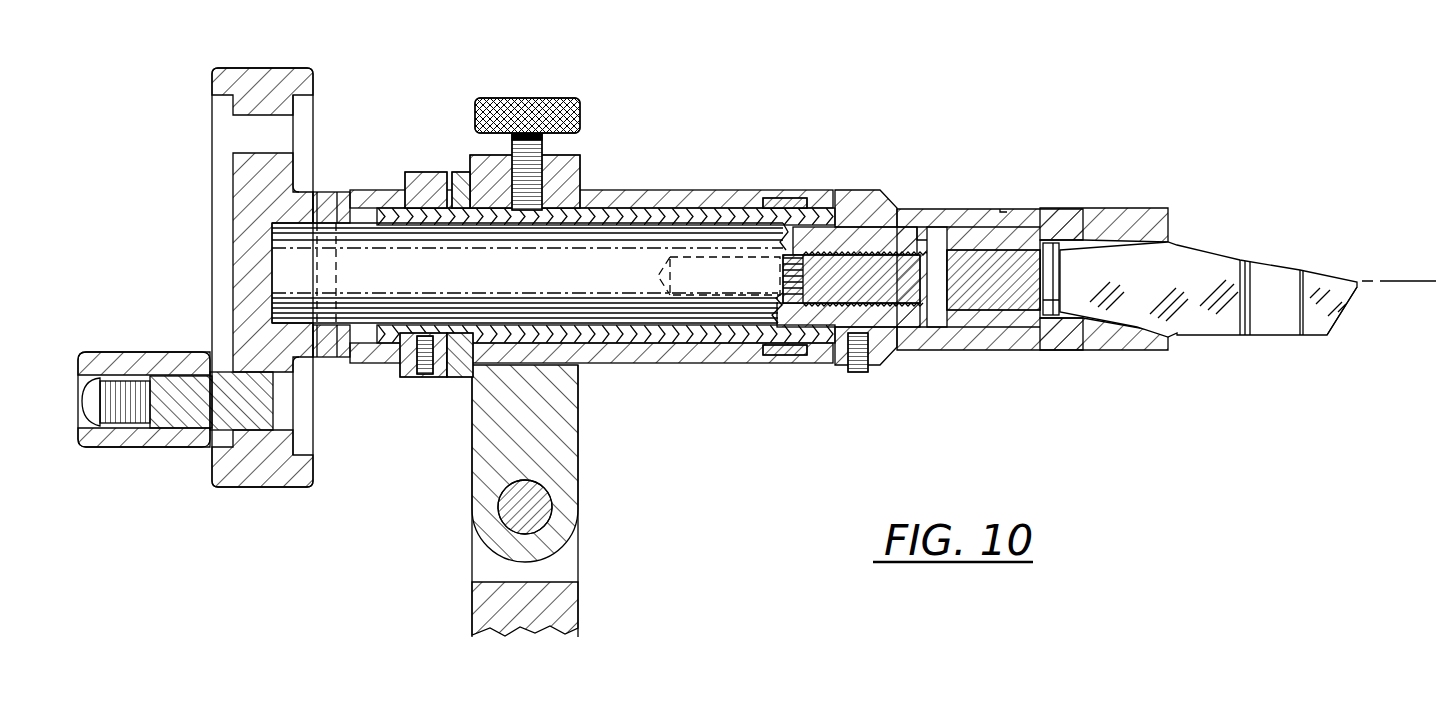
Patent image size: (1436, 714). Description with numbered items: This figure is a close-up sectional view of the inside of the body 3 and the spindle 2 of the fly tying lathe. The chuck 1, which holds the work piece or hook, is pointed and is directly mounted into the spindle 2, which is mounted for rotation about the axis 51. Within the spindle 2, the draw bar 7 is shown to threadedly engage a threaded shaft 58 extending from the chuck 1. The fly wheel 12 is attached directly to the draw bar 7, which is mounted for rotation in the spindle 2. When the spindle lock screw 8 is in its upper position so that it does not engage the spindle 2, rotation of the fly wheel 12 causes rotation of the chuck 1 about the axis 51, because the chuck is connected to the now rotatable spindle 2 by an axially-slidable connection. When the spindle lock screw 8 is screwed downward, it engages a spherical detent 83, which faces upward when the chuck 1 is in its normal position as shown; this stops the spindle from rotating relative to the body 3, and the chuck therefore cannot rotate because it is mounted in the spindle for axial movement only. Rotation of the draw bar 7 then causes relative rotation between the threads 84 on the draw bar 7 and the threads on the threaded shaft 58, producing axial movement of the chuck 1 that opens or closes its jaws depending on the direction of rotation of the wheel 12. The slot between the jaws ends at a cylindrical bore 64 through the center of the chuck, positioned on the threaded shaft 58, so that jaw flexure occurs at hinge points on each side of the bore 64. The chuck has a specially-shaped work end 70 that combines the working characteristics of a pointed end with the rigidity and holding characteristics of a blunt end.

The chuck 1 is at (1190, 268).
The spindle 2 is at (965, 230).
The front retainer 3 is at (593, 192).
The draw bar 7 is at (653, 238).
The spindle lock screw 8 is at (573, 100).
The fly wheel 12 is at (280, 82).
The axis 51 is at (1417, 280).
The threaded shaft 58 is at (898, 253).
The cylindrical bore 64 is at (1050, 272).
The work end 70 is at (1353, 308).
The detent 83 is at (487, 163).
The threads 84 is at (773, 260).